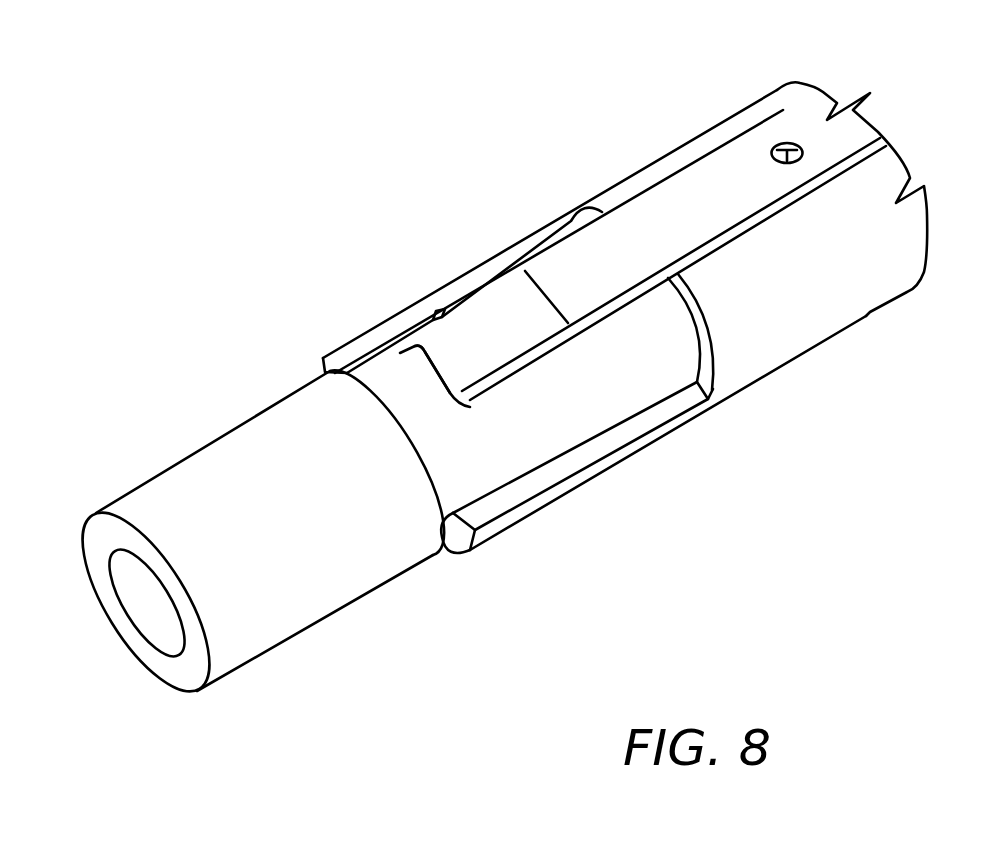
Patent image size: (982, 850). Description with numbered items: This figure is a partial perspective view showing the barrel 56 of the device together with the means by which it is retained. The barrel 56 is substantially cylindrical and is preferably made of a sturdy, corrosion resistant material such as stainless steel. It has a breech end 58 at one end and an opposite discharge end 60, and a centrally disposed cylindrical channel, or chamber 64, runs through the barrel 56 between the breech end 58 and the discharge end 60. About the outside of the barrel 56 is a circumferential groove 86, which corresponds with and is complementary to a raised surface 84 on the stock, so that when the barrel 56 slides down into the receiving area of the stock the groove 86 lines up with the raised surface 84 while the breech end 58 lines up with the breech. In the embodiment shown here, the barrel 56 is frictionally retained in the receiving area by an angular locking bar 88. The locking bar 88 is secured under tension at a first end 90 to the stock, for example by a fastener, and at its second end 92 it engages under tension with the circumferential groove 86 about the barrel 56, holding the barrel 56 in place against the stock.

The barrel 56 is at (323, 565).
The breech end 58 is at (648, 360).
The discharge end 60 is at (197, 695).
The cylindrical channel (chamber) 64 is at (150, 597).
The raised surface 84 is at (357, 360).
The circumferential groove 86 is at (408, 385).
The angular locking bar 88 is at (580, 273).
The first end 90 is at (797, 130).
The second end 92 is at (458, 362).